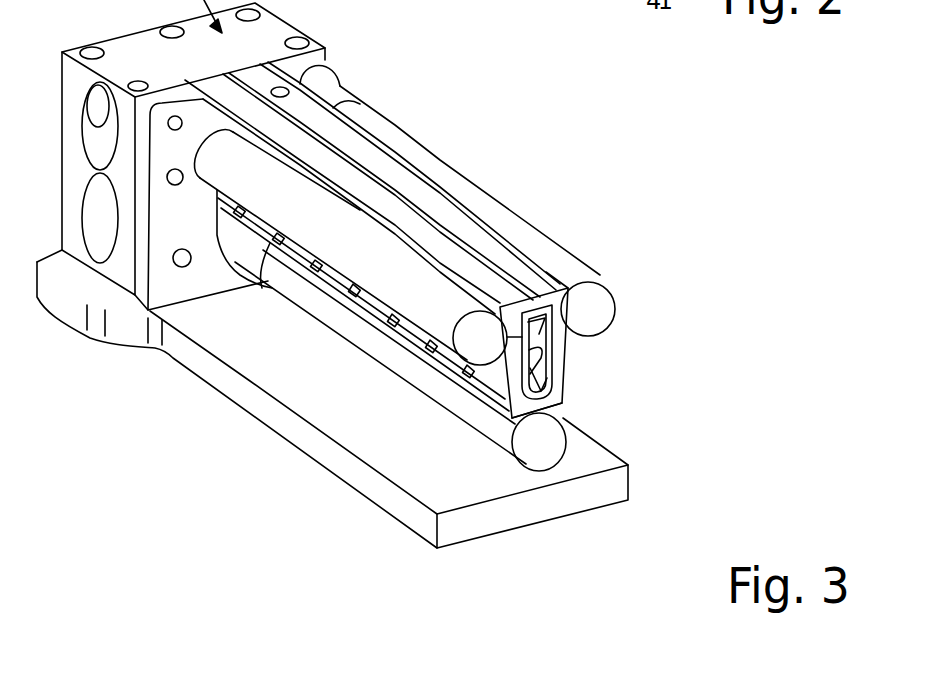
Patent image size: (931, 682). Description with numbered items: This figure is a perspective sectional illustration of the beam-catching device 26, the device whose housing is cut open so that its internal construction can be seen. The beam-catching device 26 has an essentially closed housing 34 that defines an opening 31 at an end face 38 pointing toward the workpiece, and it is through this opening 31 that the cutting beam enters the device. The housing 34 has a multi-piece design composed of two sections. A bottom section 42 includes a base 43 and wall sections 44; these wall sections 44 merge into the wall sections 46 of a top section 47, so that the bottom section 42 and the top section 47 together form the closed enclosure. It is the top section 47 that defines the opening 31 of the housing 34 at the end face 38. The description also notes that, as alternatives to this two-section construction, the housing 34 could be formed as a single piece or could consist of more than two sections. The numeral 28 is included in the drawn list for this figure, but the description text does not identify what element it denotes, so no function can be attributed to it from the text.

The beam-catching device 26 is at (620, 398).
The roller 28 is at (605, 302).
The opening 31 is at (480, 232).
The housing 34 is at (607, 352).
The end face 38 is at (506, 252).
The bottom section 42 is at (502, 425).
The base 43 is at (565, 402).
The wall sections 44 is at (530, 364).
The wall sections 46 is at (548, 328).
The top section 47 is at (503, 320).